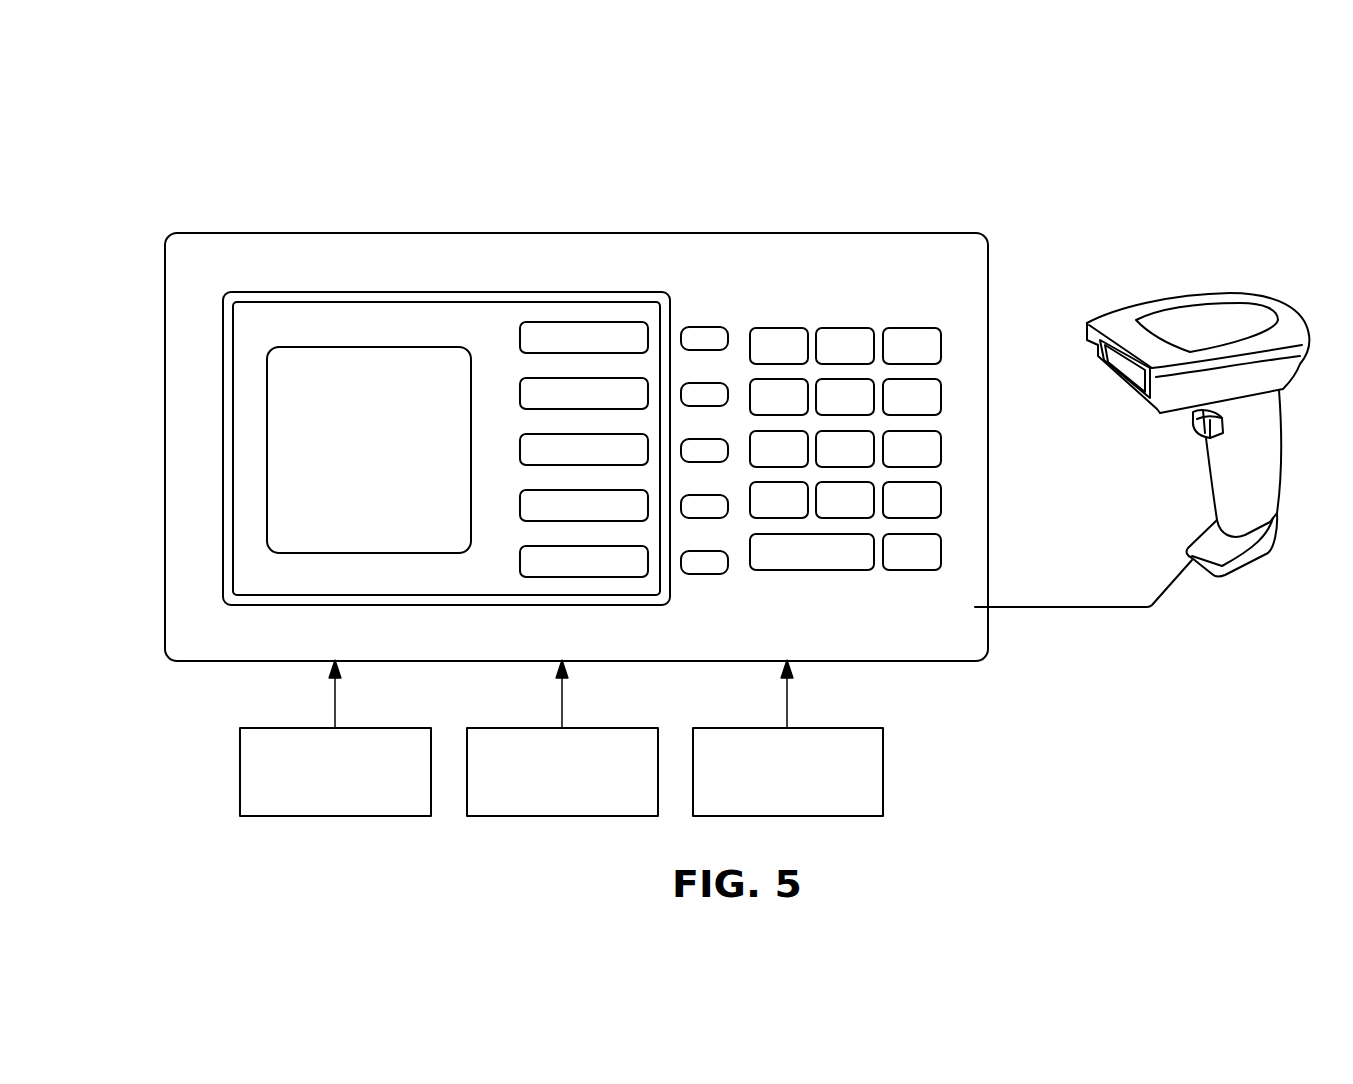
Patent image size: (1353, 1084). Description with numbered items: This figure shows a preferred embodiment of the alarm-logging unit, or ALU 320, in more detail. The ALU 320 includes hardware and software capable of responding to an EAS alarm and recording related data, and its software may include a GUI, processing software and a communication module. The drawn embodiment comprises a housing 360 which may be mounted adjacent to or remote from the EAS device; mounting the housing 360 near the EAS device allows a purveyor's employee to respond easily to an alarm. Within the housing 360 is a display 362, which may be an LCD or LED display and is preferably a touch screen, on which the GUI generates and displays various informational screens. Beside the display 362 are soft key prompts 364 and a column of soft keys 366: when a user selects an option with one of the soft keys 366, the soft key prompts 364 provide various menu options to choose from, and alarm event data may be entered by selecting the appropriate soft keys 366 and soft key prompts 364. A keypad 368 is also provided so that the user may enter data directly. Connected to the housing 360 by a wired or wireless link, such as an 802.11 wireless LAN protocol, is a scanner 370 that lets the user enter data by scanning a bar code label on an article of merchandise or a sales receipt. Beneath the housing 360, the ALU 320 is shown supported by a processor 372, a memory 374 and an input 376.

The ALU 320 is at (509, 222).
The housing 360 is at (947, 270).
The display 362 is at (383, 362).
The soft key prompts 364 is at (579, 328).
The soft keys 366 is at (715, 395).
The keypad 368 is at (937, 402).
The scanner 370 is at (1192, 320).
The processor 372 is at (316, 797).
The memory 374 is at (543, 797).
The input 376 is at (768, 797).